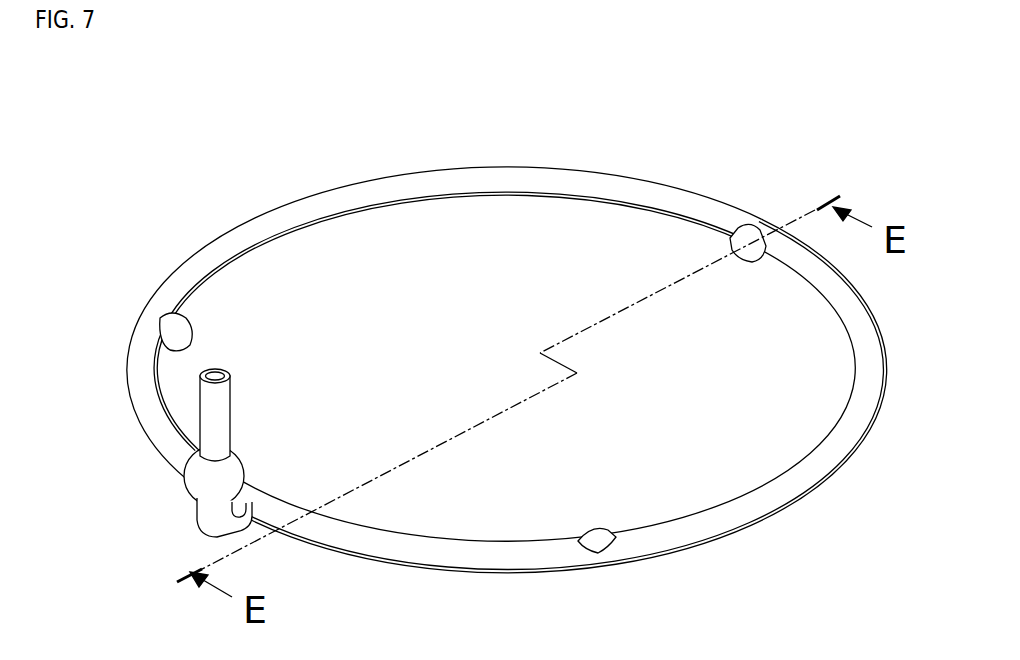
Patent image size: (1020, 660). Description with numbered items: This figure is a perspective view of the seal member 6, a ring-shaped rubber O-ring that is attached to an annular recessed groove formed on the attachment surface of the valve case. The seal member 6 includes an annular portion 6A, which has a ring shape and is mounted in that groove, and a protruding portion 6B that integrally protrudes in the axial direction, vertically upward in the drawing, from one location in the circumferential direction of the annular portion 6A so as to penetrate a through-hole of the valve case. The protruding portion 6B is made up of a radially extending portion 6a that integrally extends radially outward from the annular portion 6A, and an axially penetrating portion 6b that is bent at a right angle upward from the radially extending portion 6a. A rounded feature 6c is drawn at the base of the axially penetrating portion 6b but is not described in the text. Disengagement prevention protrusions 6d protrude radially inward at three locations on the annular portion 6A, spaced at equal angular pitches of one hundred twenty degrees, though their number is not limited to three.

The seal member 6 is at (477, 324).
The annular portion 6A is at (308, 207).
The protruding portion 6B is at (191, 474).
The radially extending portion 6a is at (243, 522).
The axially penetrating portion 6b is at (237, 431).
The spherical portion 6c is at (208, 477).
The disengagement prevention protrusion 6d is at (182, 329).